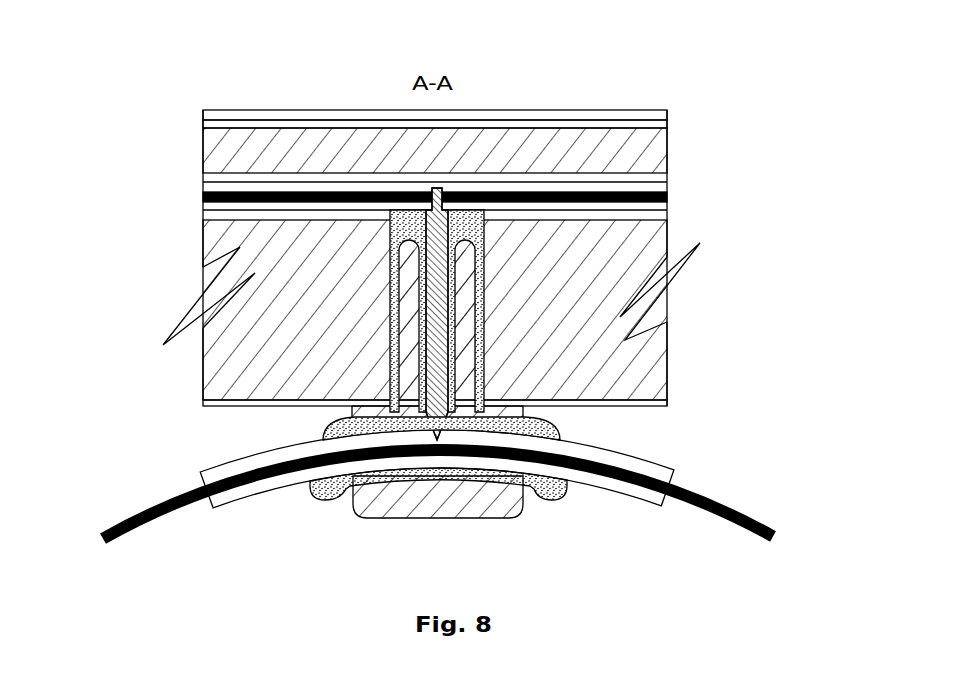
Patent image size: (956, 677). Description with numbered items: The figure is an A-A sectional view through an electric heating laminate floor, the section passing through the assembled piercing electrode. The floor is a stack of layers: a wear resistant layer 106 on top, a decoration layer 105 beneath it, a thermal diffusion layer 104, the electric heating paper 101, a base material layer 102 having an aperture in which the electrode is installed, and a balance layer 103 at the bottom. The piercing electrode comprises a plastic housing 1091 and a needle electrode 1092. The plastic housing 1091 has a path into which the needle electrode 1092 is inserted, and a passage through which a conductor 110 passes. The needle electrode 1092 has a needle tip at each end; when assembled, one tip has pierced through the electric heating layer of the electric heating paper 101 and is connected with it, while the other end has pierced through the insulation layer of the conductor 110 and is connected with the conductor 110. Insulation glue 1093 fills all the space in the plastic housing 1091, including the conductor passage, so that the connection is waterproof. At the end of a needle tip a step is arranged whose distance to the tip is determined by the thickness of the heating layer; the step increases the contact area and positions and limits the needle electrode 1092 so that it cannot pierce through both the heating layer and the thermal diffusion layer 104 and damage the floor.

The electric heating paper 101 is at (668, 193).
The base material layer 102 is at (667, 360).
The balance layer 103 is at (668, 400).
The thermal diffusion layer 104 is at (668, 147).
The decoration layer 105 is at (667, 113).
The wear resistant layer 106 is at (657, 104).
The conductor 110 is at (712, 495).
The plastic housing 1091 is at (482, 330).
The needle electrode 1092 is at (445, 262).
The insulation glue 1093 is at (398, 228).